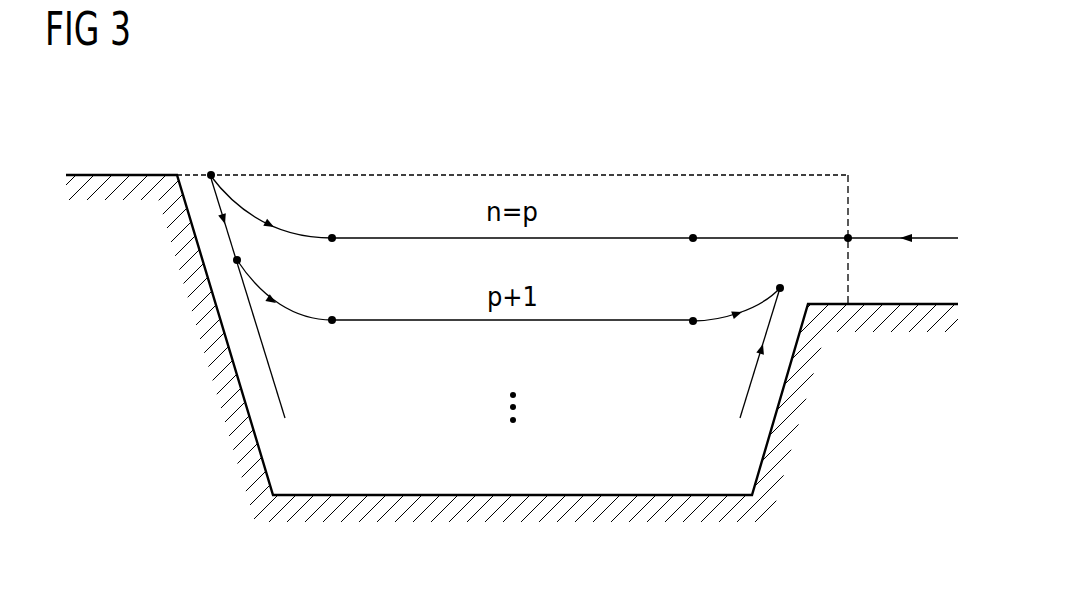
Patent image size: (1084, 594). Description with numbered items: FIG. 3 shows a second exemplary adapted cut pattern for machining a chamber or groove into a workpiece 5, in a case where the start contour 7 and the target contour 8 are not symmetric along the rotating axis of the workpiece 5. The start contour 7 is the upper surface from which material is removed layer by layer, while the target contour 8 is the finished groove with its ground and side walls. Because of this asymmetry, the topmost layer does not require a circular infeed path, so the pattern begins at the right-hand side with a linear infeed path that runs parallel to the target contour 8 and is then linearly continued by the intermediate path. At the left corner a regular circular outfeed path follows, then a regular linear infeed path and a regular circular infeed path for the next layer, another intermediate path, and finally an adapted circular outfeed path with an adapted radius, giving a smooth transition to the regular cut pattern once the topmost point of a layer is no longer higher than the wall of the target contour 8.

The workpiece 5 is at (938, 443).
The start contour 7 is at (511, 172).
The target contour 8 is at (229, 238).